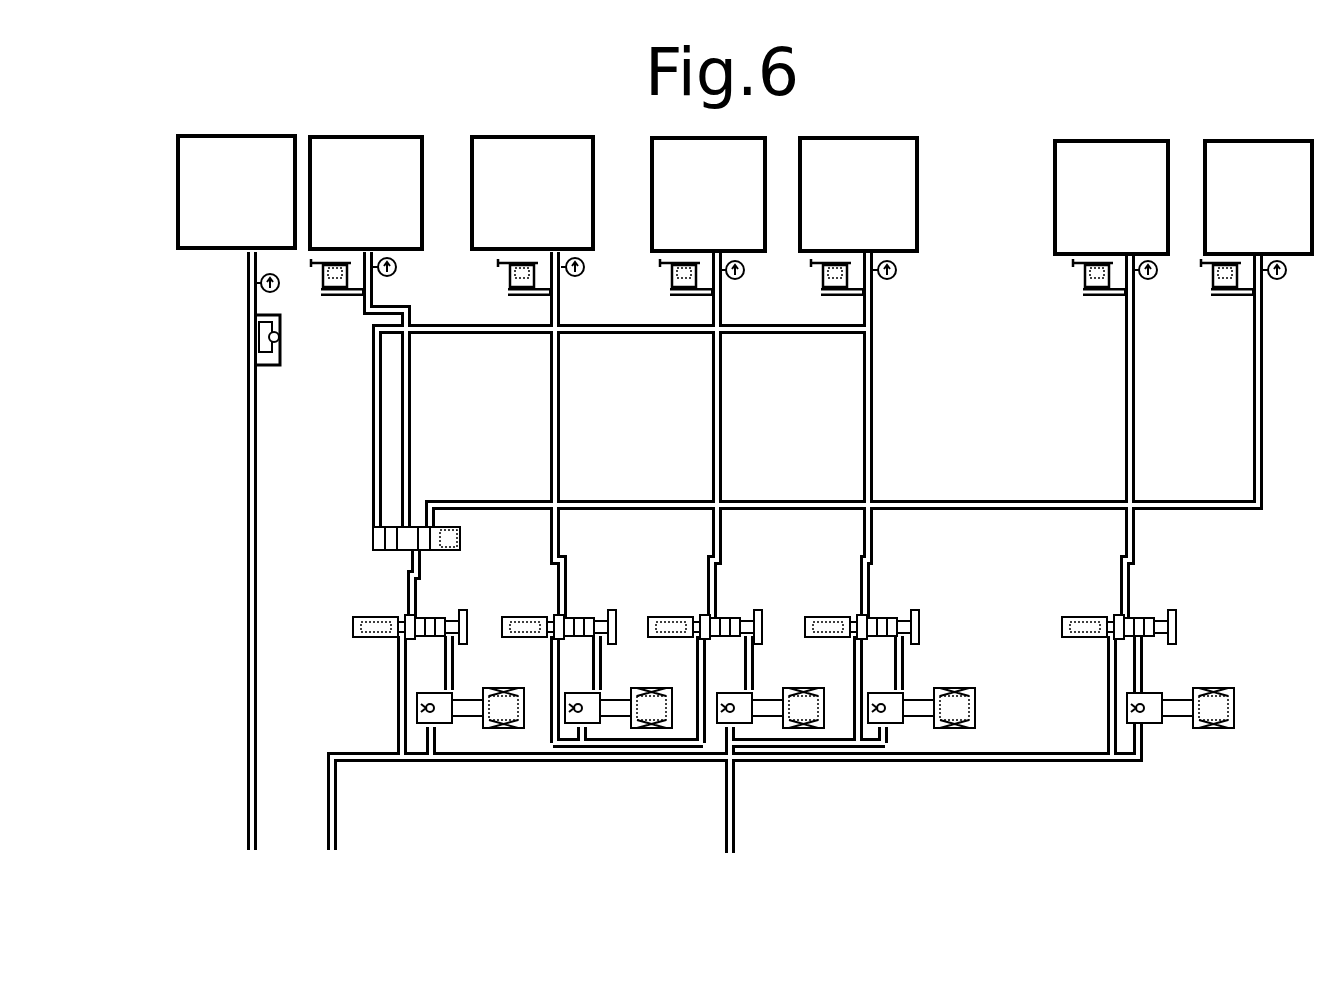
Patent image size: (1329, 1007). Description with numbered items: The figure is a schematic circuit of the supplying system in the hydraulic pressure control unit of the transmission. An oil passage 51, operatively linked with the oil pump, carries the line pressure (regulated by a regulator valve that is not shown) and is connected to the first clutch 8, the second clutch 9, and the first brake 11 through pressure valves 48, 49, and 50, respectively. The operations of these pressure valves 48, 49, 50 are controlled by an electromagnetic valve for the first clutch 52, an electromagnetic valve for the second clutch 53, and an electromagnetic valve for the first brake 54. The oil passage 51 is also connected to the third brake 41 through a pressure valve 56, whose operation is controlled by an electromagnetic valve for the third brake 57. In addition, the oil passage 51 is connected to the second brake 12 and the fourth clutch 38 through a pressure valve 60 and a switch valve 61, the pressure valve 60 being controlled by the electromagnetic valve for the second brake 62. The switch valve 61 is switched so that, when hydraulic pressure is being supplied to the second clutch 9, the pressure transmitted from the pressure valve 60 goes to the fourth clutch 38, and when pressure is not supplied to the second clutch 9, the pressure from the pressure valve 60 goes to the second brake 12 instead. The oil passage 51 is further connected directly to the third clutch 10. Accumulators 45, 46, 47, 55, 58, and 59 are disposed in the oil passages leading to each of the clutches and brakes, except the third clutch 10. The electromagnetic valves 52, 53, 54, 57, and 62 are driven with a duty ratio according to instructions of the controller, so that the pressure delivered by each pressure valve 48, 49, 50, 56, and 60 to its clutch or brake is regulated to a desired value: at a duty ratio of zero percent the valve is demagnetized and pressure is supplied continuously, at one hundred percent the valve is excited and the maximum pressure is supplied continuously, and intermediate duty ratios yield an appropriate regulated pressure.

The first clutch 8 is at (708, 208).
The second clutch 9 is at (858, 208).
The third clutch 10 is at (236, 250).
The first brake 11 is at (532, 206).
The second brake 12 is at (366, 206).
The fourth clutch 38 is at (1258, 210).
The third brake 41 is at (1111, 210).
The accumulator 45 is at (660, 292).
The accumulator 46 is at (810, 292).
The accumulator 47 is at (505, 284).
The pressure valve 48 is at (735, 612).
The pressure valve 49 is at (880, 612).
The pressure valve 50 is at (592, 612).
The oil passage 51 is at (250, 838).
The electromagnetic valve for the first clutch 52 is at (785, 690).
The electromagnetic valve for the second clutch 53 is at (972, 688).
The electromagnetic valve for the first brake 54 is at (632, 690).
The accumulator 55 is at (1073, 283).
The pressure valve 56 is at (1174, 612).
The electromagnetic valve for third brake 57 is at (1215, 729).
The accumulator 58 is at (322, 279).
The accumulator 59 is at (1204, 290).
The pressure valve 60 is at (460, 612).
The switch valve 61 is at (422, 525).
The electromagnetic valve for the second brake 62 is at (490, 690).